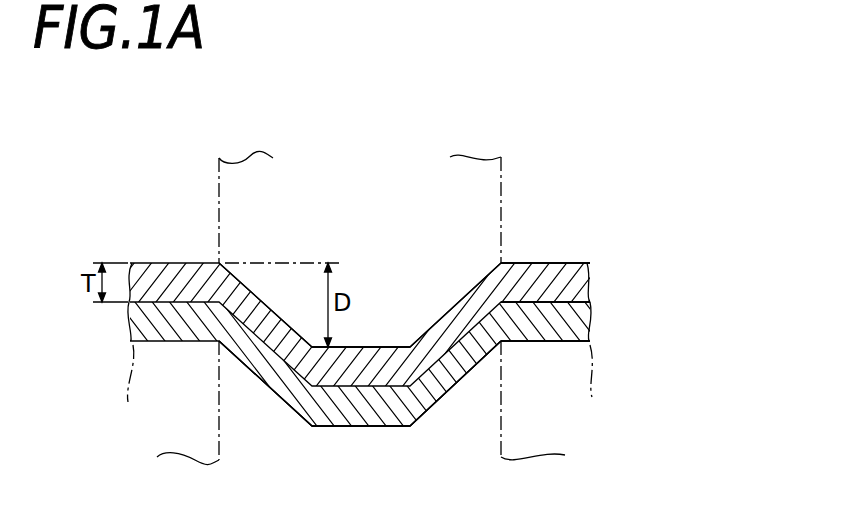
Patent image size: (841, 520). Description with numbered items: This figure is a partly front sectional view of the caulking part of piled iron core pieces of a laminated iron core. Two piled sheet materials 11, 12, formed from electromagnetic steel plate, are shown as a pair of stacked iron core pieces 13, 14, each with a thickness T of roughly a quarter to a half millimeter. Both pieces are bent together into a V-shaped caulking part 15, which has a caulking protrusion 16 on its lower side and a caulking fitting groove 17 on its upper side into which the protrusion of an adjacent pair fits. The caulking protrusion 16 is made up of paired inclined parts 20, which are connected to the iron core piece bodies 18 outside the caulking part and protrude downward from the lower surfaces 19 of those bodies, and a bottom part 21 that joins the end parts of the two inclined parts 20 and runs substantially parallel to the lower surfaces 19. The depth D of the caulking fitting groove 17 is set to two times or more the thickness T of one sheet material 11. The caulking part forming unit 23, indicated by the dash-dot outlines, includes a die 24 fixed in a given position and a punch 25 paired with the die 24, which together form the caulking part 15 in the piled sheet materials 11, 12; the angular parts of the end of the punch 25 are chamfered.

The sheet material 11 is at (545, 282).
The sheet material 12 is at (545, 321).
The iron core piece 13 is at (548, 261).
The iron core piece 14 is at (542, 345).
The caulking part 15 is at (407, 273).
The caulking protrusion 16 is at (335, 427).
The caulking fitting groove 17 is at (382, 327).
The iron core piece body 18 is at (169, 257).
The lower surface 19 is at (160, 343).
The inclined part 20 is at (274, 393).
The bottom part 21 is at (383, 427).
The caulking part forming unit 23 is at (432, 153).
The die 24 is at (168, 418).
The punch 25 is at (488, 182).